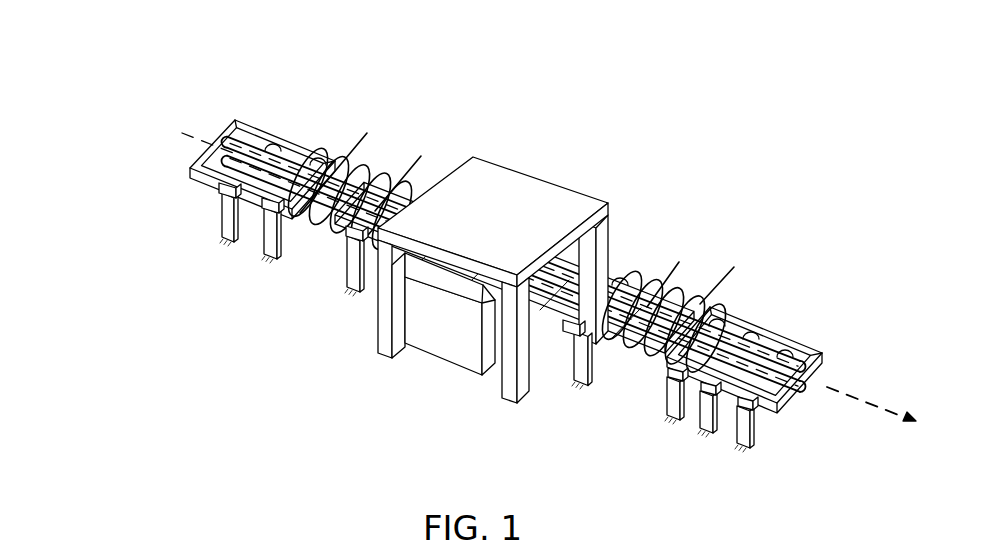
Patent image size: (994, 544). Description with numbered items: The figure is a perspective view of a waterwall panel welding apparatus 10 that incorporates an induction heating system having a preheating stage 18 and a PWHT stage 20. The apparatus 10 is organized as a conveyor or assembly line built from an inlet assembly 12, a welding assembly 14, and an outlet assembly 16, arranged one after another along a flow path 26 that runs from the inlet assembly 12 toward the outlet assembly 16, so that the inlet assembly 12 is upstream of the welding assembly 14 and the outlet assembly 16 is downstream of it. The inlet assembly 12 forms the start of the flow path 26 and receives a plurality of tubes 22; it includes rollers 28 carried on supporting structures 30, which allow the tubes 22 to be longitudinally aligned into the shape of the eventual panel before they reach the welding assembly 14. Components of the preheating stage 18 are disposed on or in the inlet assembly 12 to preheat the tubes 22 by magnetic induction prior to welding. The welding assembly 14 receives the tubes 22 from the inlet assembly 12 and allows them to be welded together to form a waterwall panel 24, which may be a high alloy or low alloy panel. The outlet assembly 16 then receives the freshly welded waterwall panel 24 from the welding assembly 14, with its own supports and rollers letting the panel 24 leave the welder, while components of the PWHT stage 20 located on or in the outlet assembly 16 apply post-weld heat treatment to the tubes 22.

The waterwall panel welding apparatus 10 is at (473, 256).
The inlet assembly 12 is at (321, 145).
The welding assembly 14 is at (567, 141).
The outlet assembly 16 is at (708, 270).
The preheating stage 18 is at (351, 133).
The PWHT stage 20 is at (688, 272).
The tubes 22 is at (292, 156).
The waterwall panel 24 is at (760, 338).
The flow path 26 is at (887, 396).
The rollers 28 is at (350, 267).
The supporting structures 30 is at (203, 189).